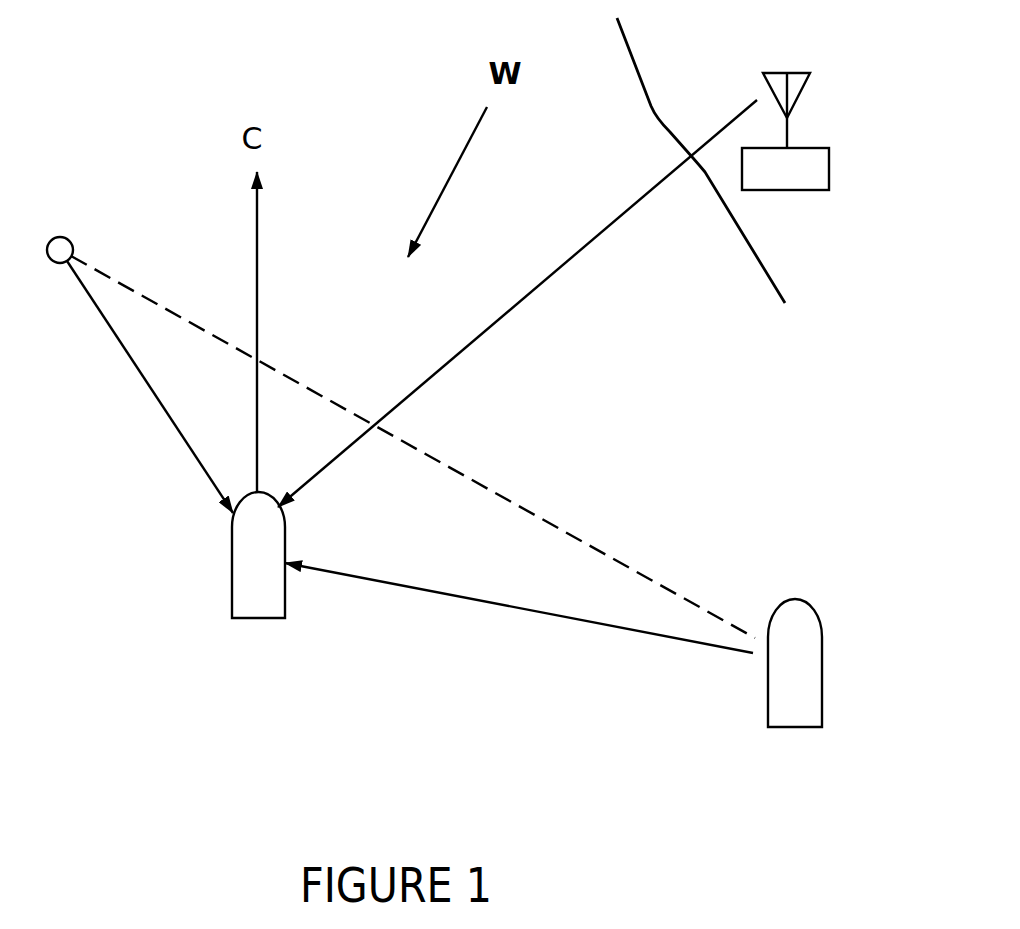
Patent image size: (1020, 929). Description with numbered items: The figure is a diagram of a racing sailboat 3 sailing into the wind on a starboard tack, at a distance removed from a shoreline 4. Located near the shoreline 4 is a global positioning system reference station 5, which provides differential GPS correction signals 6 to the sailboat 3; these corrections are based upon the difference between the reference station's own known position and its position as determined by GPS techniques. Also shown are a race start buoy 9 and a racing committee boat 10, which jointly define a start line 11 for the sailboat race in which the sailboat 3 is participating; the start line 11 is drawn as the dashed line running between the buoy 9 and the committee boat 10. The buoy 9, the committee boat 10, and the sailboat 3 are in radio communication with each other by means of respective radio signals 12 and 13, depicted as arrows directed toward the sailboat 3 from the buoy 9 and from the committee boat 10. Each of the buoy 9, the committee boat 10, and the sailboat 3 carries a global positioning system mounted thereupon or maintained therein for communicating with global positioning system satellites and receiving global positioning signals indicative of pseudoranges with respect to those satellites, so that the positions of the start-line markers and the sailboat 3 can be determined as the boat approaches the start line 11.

The racing sailboat 3 is at (230, 550).
The shoreline 4 is at (665, 130).
The global positioning system (GPS) reference station 5 is at (797, 190).
The differential GPS correction signals 6 is at (470, 348).
The race start buoy 9 is at (70, 243).
The racing committee boat 10 is at (822, 640).
The start line 11 is at (482, 485).
The radio signals 12 is at (140, 370).
The radio signals 13 is at (425, 600).